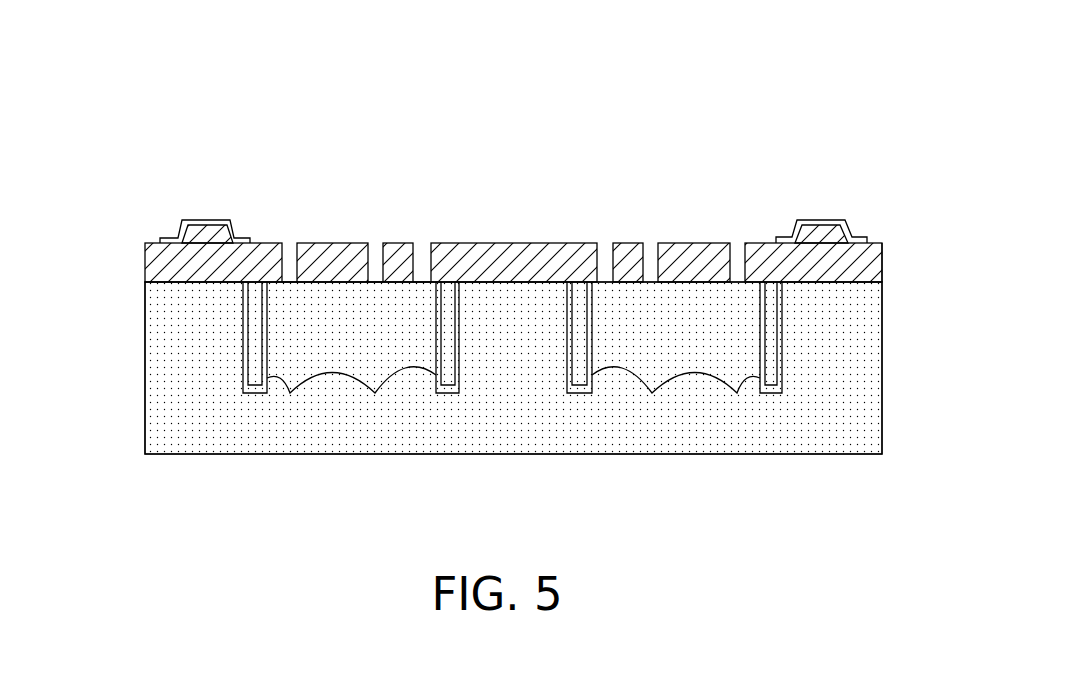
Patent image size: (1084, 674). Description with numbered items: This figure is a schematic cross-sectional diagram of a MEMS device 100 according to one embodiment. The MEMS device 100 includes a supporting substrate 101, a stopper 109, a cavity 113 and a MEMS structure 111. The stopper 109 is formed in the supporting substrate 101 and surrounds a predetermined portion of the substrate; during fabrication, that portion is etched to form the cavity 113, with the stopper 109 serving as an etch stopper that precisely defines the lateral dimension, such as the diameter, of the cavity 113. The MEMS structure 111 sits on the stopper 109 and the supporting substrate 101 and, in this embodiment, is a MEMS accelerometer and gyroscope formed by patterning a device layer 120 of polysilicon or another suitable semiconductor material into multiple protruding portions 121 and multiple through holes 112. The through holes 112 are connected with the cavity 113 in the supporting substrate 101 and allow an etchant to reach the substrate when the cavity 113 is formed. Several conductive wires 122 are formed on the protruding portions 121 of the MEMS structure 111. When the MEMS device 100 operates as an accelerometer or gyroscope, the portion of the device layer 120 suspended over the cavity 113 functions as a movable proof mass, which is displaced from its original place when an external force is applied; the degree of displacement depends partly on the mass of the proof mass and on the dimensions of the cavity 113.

The MEMS device 100 is at (735, 100).
The supporting substrate 101 is at (538, 423).
The stopper 109 is at (232, 329).
The MEMS structure 111 is at (889, 272).
The through holes 112 is at (288, 247).
The cavity 113 is at (358, 315).
The device layer 120 is at (167, 265).
The protruding portions 121 is at (833, 231).
The conductive wires 122 is at (210, 225).